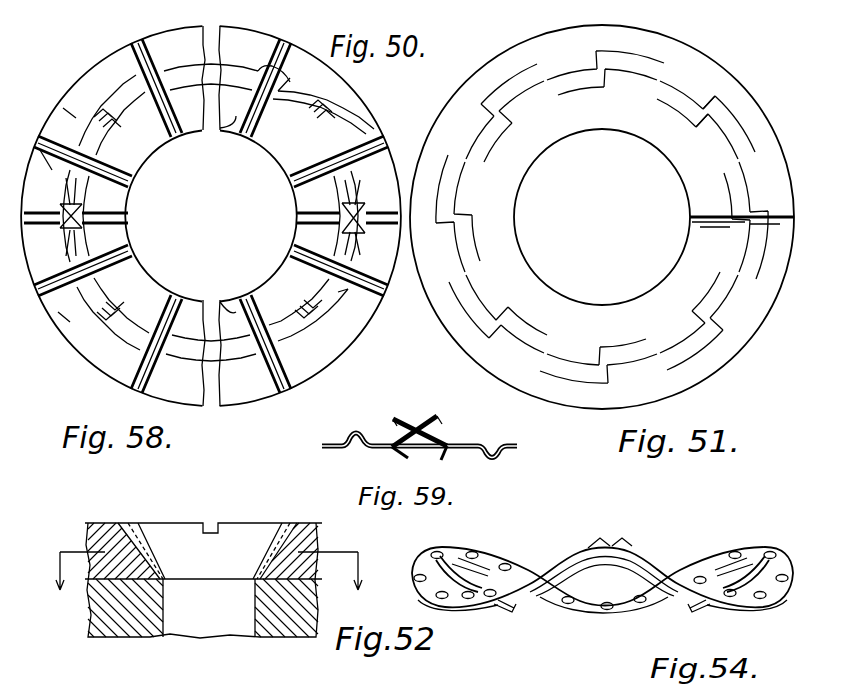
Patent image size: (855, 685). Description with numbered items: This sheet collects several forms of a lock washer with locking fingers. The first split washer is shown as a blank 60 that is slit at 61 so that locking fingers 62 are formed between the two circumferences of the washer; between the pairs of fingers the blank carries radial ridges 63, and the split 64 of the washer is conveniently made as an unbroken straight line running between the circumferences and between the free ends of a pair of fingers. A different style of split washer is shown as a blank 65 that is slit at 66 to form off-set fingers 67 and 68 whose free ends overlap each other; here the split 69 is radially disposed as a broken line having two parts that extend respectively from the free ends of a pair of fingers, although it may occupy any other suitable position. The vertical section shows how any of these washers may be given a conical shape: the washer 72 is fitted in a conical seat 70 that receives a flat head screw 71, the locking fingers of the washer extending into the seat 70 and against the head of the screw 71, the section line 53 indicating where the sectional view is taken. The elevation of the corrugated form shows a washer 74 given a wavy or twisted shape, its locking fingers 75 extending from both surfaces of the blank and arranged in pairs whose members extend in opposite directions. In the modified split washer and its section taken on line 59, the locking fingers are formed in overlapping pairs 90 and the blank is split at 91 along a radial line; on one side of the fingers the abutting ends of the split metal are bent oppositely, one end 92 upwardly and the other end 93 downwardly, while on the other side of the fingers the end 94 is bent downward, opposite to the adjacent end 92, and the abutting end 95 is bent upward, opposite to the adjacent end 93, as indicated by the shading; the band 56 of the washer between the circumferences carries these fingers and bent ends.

In FIG. 52, the section line 53 is at (206, 584).
In FIG. 50, the ring band 56 is at (352, 306).
In FIG. 50, the ring 59 is at (66, 100).
In FIG. 50, the blank 60 is at (234, 120).
In FIG. 50, the slit 61 is at (258, 53).
In FIG. 50, the locking fingers 62 is at (322, 118).
In FIG. 50, the radial ridges 63 is at (228, 314).
In FIG. 50, the split 64 is at (371, 212).
In FIG. 51, the blank 65 is at (606, 123).
In FIG. 51, the slit 66 is at (722, 102).
In FIG. 51, the off-set finger 67 is at (687, 113).
In FIG. 51, the off-set finger 68 is at (723, 123).
In FIG. 51, the split 69 is at (710, 218).
In FIG. 52, the conical seat 70 is at (128, 530).
In FIG. 52, the flat head screw 71 is at (203, 580).
In FIG. 52, the washer 72 is at (292, 523).
In FIG. 54, the washer 74 is at (557, 560).
In FIG. 54, the locking fingers 75 is at (460, 560).
In FIG. 58, the overlapping pairs of locking fingers 90 is at (132, 190).
In FIG. 59, the overlapping pairs of locking fingers 90 is at (437, 414).
In FIG. 58, the split 91 is at (50, 192).
In FIG. 58, the end 92 is at (54, 266).
In FIG. 59, the end 92 is at (446, 440).
In FIG. 58, the end 93 is at (62, 208).
In FIG. 59, the end 93 is at (396, 452).
In FIG. 58, the end 94 is at (76, 254).
In FIG. 59, the end 94 is at (436, 452).
In FIG. 58, the end 95 is at (88, 224).
In FIG. 59, the end 95 is at (395, 424).